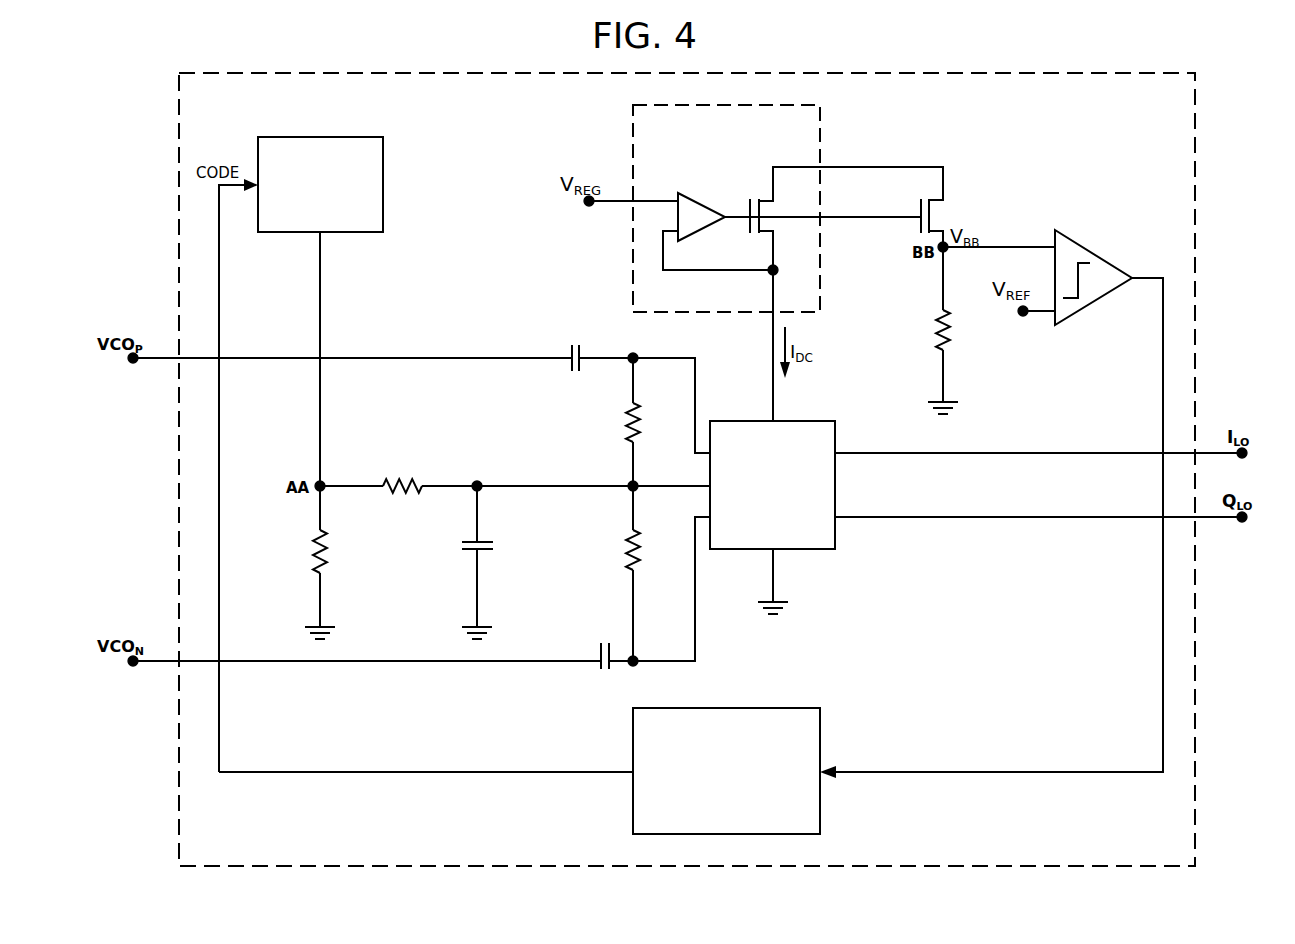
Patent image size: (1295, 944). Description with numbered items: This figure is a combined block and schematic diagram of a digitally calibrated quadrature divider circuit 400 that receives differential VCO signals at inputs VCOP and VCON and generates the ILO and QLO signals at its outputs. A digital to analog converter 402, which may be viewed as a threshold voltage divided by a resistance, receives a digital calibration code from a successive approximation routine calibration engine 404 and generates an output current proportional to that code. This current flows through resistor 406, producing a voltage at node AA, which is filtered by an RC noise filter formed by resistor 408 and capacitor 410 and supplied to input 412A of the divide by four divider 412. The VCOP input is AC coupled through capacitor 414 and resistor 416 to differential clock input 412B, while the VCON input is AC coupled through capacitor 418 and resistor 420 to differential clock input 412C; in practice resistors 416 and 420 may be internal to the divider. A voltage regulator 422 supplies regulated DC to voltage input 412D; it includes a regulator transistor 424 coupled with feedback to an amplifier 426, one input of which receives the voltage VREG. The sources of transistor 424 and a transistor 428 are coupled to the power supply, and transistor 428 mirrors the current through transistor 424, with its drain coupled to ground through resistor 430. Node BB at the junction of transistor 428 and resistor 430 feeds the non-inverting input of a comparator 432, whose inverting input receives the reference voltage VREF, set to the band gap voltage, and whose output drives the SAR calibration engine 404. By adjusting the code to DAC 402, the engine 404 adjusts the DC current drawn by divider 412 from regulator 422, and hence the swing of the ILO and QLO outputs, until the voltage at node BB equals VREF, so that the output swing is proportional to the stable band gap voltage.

The divider circuit 400 is at (276, 55).
The digital to analog converter 402 is at (297, 173).
The SAR calibration engine 404 is at (726, 759).
The resistor 406 is at (294, 562).
The resistor 408 is at (515, 473).
The capacitor 410 is at (451, 562).
The divider 412 is at (764, 505).
The input 412A is at (681, 475).
The differential clock input 412B is at (736, 440).
The differential clock input 412C is at (734, 531).
The voltage input 412D is at (808, 408).
The capacitor 414 is at (610, 388).
The resistor 416 is at (621, 422).
The capacitor 418 is at (624, 608).
The resistor 420 is at (621, 573).
The voltage regulator 422 is at (696, 208).
The regulator transistor 424 is at (825, 279).
The amplifier 426 is at (718, 221).
The transistor 428 is at (970, 238).
The resistor 430 is at (933, 353).
The comparator 432 is at (991, 501).